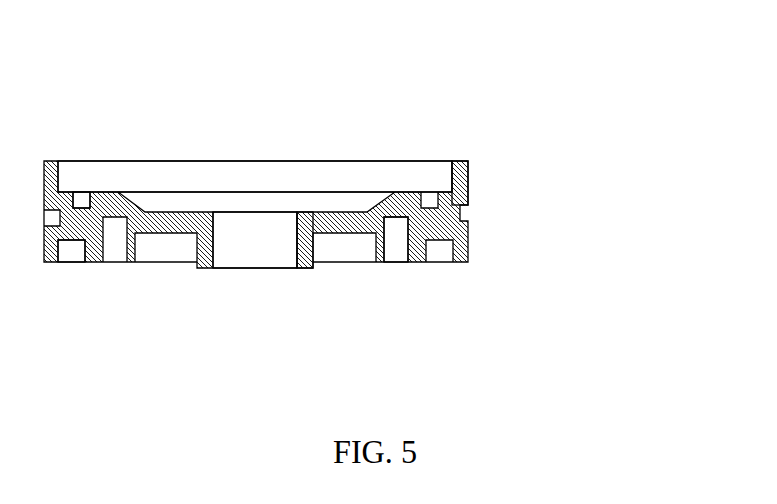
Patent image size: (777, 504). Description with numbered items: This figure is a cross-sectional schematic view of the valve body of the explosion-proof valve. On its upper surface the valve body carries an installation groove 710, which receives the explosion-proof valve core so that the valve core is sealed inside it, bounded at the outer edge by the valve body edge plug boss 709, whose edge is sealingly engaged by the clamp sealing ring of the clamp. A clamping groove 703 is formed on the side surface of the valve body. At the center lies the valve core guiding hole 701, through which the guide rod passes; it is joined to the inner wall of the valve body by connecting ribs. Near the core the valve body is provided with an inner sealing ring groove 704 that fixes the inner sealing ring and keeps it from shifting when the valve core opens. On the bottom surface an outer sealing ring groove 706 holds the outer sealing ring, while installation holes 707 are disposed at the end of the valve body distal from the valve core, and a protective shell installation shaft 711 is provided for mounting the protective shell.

The valve core guiding hole 701 is at (250, 256).
The clamping groove 703 is at (460, 215).
The inner sealing ring groove 704 is at (80, 198).
The outer sealing ring groove 706 is at (68, 253).
The installation hole 707 is at (398, 252).
The valve body edge plug boss 709 is at (459, 161).
The installation groove 710 is at (245, 170).
The protective shell installation shaft 711 is at (317, 256).